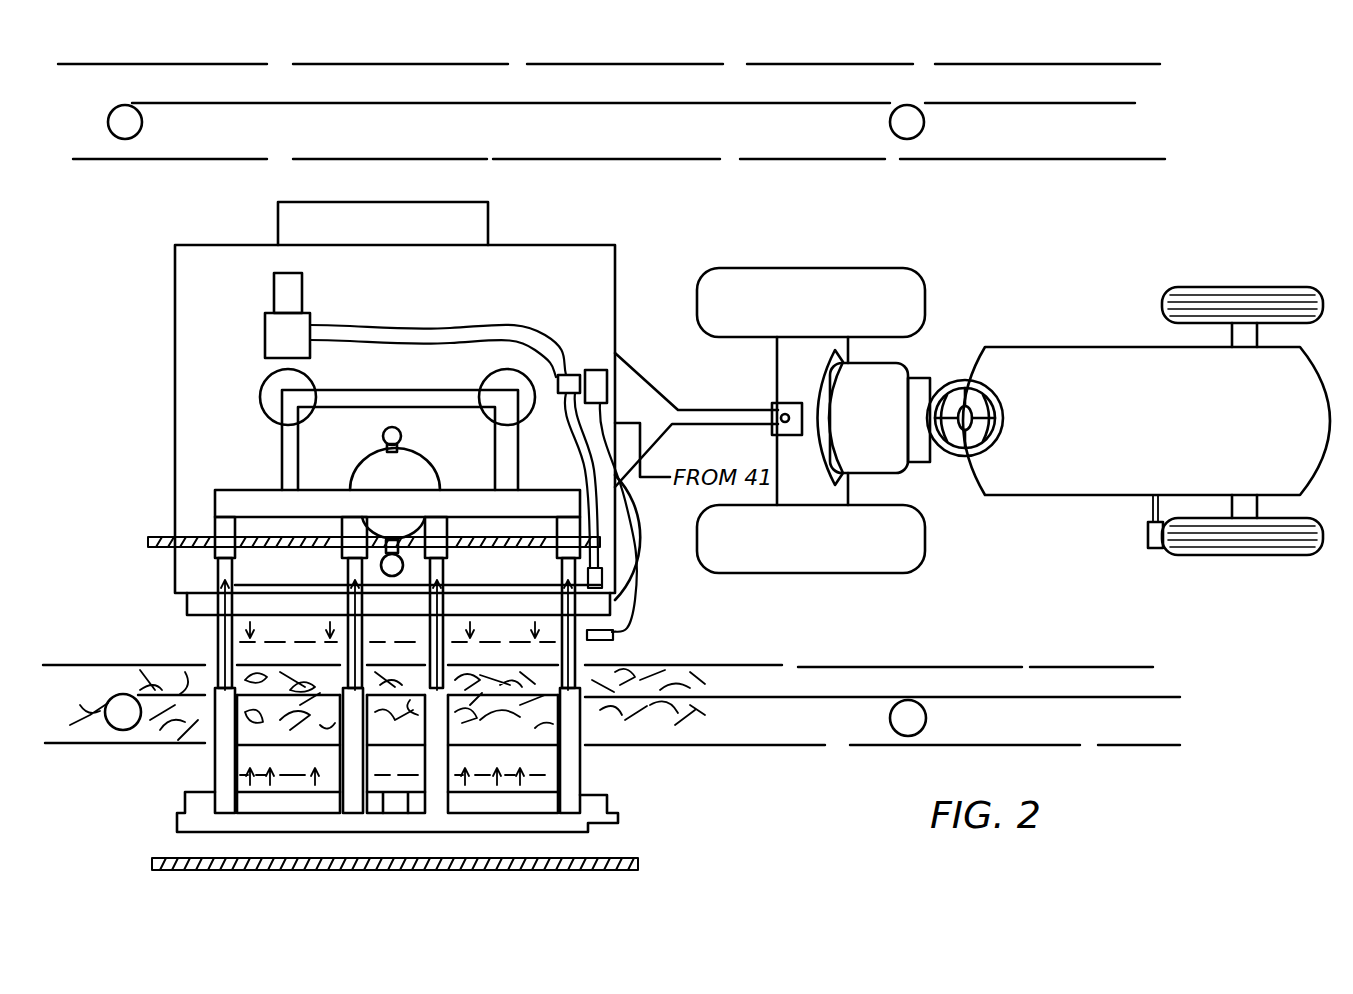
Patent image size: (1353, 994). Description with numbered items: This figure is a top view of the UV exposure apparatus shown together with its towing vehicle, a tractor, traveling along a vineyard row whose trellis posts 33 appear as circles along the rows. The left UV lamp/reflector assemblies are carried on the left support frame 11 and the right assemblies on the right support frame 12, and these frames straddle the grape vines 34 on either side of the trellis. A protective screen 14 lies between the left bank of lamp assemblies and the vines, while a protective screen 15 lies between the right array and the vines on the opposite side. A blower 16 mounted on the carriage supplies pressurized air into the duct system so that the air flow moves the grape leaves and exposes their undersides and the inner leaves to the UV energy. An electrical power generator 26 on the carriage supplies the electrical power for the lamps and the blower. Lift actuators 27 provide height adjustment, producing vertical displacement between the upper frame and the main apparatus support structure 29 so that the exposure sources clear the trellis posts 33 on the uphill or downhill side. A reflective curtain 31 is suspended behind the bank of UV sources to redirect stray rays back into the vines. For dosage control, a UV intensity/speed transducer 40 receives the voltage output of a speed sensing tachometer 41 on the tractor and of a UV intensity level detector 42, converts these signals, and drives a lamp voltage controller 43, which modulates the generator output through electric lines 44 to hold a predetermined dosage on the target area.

The left support frame 11 is at (218, 508).
The right support frame 12 is at (177, 822).
The protective screen 14 is at (724, 665).
The protective screen 15 is at (760, 745).
The blower 16 is at (305, 380).
The electrical power generator 26 is at (274, 292).
The lift actuators 27 is at (383, 437).
The main apparatus support structure 29 is at (418, 470).
The reflective curtain 31 is at (620, 858).
The trellis posts 33 is at (142, 125).
The grape vines 34 is at (176, 745).
The UV intensity/speed transducer 40 is at (600, 370).
The speed sensing tachometer 41 is at (1148, 540).
The UV intensity level detector 42 is at (616, 642).
The lamp voltage controller 43 is at (580, 374).
The electric lines 44 is at (394, 333).